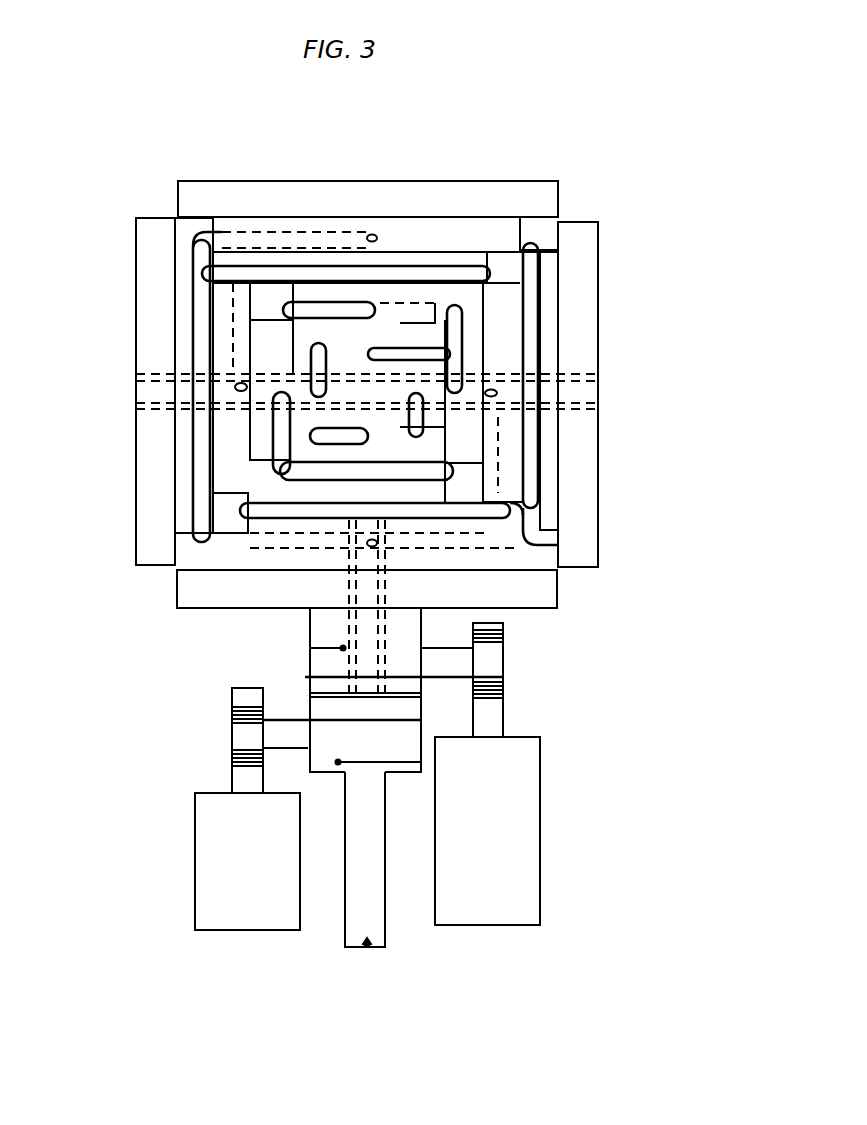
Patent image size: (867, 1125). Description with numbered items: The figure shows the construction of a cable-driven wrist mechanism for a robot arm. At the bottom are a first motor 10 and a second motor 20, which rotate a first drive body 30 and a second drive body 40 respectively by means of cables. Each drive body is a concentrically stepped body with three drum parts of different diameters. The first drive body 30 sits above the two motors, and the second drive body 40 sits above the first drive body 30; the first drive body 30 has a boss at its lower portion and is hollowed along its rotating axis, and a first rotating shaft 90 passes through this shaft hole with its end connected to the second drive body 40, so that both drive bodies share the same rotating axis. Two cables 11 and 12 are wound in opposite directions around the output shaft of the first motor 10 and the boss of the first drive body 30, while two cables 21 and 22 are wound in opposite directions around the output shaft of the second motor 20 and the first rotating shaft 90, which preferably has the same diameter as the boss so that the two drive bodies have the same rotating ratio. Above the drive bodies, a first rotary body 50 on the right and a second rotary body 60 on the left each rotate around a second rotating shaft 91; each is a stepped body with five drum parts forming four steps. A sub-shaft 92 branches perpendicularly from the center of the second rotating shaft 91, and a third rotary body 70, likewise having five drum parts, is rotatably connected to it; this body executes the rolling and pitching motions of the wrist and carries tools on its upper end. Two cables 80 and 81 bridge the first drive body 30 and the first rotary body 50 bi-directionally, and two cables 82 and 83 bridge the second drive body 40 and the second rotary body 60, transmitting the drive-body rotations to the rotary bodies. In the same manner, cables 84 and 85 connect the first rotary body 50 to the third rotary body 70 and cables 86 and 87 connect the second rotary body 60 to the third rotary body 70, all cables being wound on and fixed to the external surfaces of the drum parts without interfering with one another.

The first motor 10 is at (535, 825).
The cable 11 is at (505, 688).
The cable 12 is at (505, 635).
The second motor 20 is at (198, 853).
The cable 21 is at (232, 762).
The cable 22 is at (230, 707).
The first drive body 30 is at (557, 583).
The second drive body 40 is at (322, 447).
The first rotary body 50 is at (582, 427).
The second rotary body 60 is at (150, 334).
The third rotary body 70 is at (521, 215).
The cable 80 is at (508, 547).
The cable 81 is at (522, 508).
The cable 82 is at (258, 450).
The cable 83 is at (290, 483).
The cable 84 is at (457, 362).
The cable 85 is at (452, 342).
The cable 86 is at (210, 276).
The cable 87 is at (200, 234).
The first rotating shaft 90 is at (366, 952).
The second rotating shaft 91 is at (598, 388).
The sub-shaft 92 is at (360, 325).